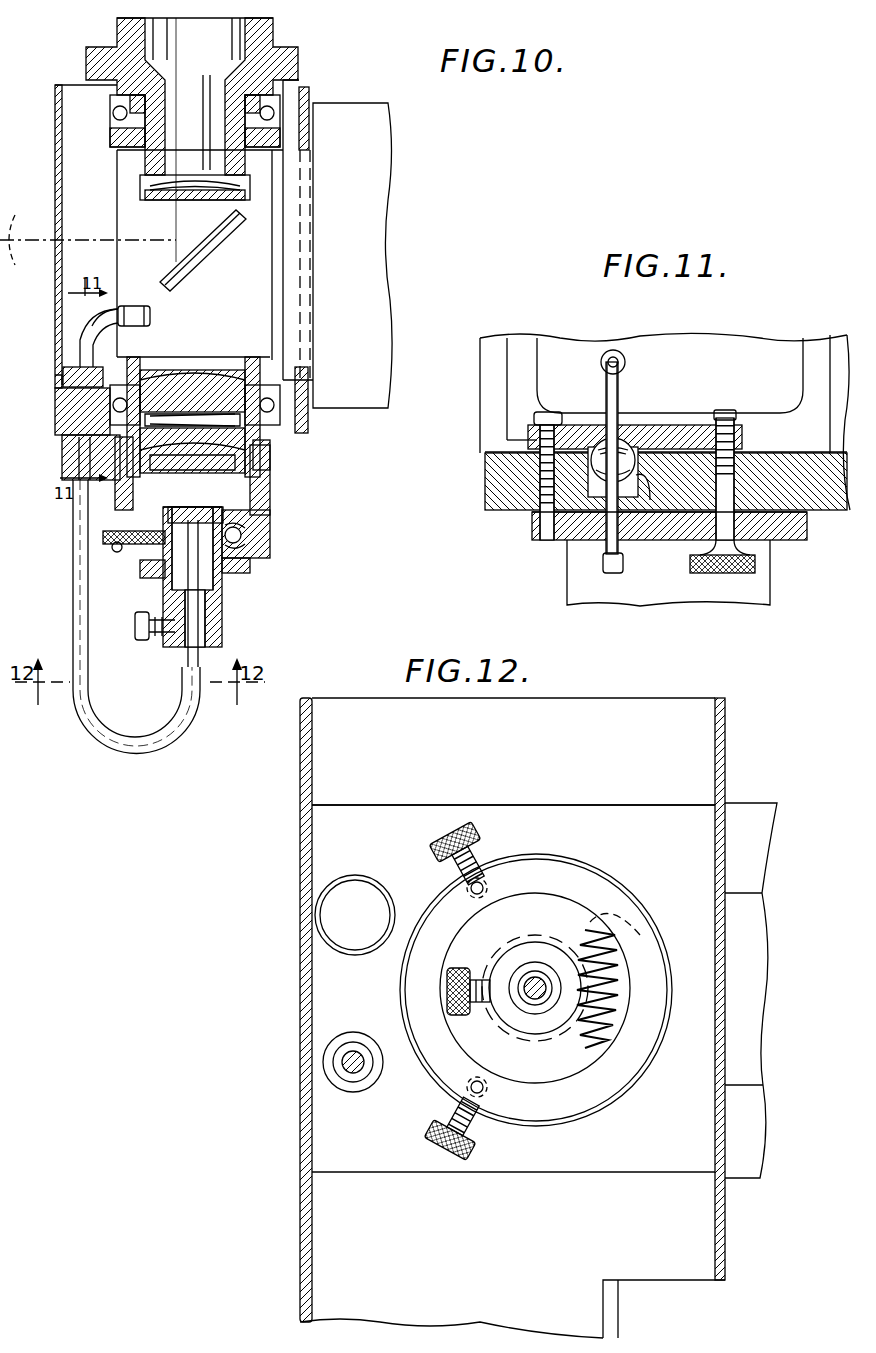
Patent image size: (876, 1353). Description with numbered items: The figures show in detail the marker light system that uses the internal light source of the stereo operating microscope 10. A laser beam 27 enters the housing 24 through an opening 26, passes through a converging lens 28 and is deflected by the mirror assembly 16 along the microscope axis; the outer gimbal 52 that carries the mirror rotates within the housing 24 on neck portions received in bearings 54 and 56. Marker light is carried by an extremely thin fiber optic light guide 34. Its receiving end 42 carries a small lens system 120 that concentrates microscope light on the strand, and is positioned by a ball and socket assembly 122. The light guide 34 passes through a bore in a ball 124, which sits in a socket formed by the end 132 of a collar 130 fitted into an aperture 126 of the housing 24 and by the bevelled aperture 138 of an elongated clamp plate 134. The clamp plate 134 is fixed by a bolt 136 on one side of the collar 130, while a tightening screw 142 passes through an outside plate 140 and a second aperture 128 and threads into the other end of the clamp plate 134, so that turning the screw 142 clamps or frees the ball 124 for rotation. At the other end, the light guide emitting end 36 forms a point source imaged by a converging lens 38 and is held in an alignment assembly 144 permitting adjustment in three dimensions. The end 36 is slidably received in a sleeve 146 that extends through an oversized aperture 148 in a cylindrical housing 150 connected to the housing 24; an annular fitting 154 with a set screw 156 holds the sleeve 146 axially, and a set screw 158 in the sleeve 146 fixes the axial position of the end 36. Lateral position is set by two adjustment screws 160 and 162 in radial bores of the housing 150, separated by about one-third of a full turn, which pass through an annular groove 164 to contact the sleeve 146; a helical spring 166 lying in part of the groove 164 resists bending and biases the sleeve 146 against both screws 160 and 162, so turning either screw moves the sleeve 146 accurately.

In FIG. 10, the microscope 10 is at (375, 195).
In FIG. 10, the mirror assembly 16 is at (172, 258).
In FIG. 10, the housing 24 is at (55, 132).
In FIG. 11, the housing 24 is at (497, 485).
In FIG. 10, the opening 26 is at (150, 40).
In FIG. 10, the laser beam 27 is at (325, 66).
In FIG. 10, the converging lens 28 is at (205, 185).
In FIG. 10, the fiber optic light guide 34 is at (90, 332).
In FIG. 11, the fiber optic light guide 34 is at (620, 362).
In FIG. 12, the fiber optic light guide 34 is at (538, 965).
In FIG. 10, the light guide emitting end 36 is at (182, 520).
In FIG. 10, the converging lens 38 is at (212, 458).
In FIG. 10, the receiving end 42 is at (140, 316).
In FIG. 11, the receiving end 42 is at (614, 356).
In FIG. 10, the outer gimbal 52 is at (228, 287).
In FIG. 10, the bearing 54 is at (62, 445).
In FIG. 10, the bearing 56 is at (110, 115).
In FIG. 10, the lens system 120 is at (150, 316).
In FIG. 10, the ball and socket assembly 122 is at (50, 381).
In FIG. 11, the ball and socket assembly 122 is at (572, 355).
In FIG. 10, the ball 124 is at (55, 420).
In FIG. 11, the ball 124 is at (672, 433).
In FIG. 11, the aperture 126 is at (637, 500).
In FIG. 11, the aperture 128 is at (740, 452).
In FIG. 11, the collar 130 is at (547, 512).
In FIG. 12, the collar 130 is at (362, 1042).
In FIG. 11, the end of collar 132 is at (595, 425).
In FIG. 10, the clamp plate 134 is at (75, 372).
In FIG. 11, the clamp plate 134 is at (700, 428).
In FIG. 11, the bolt 136 is at (528, 438).
In FIG. 11, the aperture 138 is at (624, 440).
In FIG. 10, the plate 140 is at (100, 485).
In FIG. 11, the plate 140 is at (795, 540).
In FIG. 12, the plate 140 is at (338, 996).
In FIG. 11, the tightening screw 142 is at (760, 575).
In FIG. 12, the tightening screw 142 is at (360, 898).
In FIG. 10, the alignment assembly 144 is at (112, 614).
In FIG. 12, the alignment assembly 144 is at (573, 848).
In FIG. 10, the sleeve 146 is at (222, 622).
In FIG. 12, the sleeve 146 is at (528, 1032).
In FIG. 10, the oversized aperture 148 is at (218, 528).
In FIG. 10, the cylindrical housing 150 is at (272, 540).
In FIG. 12, the cylindrical housing 150 is at (640, 1073).
In FIG. 10, the annular fitting 154 is at (248, 575).
In FIG. 10, the set screw 156 is at (140, 570).
In FIG. 10, the set screw 158 is at (143, 640).
In FIG. 12, the set screw 158 is at (455, 1015).
In FIG. 10, the adjustment screw 160 is at (103, 537).
In FIG. 12, the adjustment screw 160 is at (458, 832).
In FIG. 12, the adjustment screw 162 is at (437, 1118).
In FIG. 10, the annular groove 164 is at (242, 532).
In FIG. 12, the annular groove 164 is at (590, 925).
In FIG. 10, the helical spring 166 is at (240, 543).
In FIG. 12, the helical spring 166 is at (643, 935).